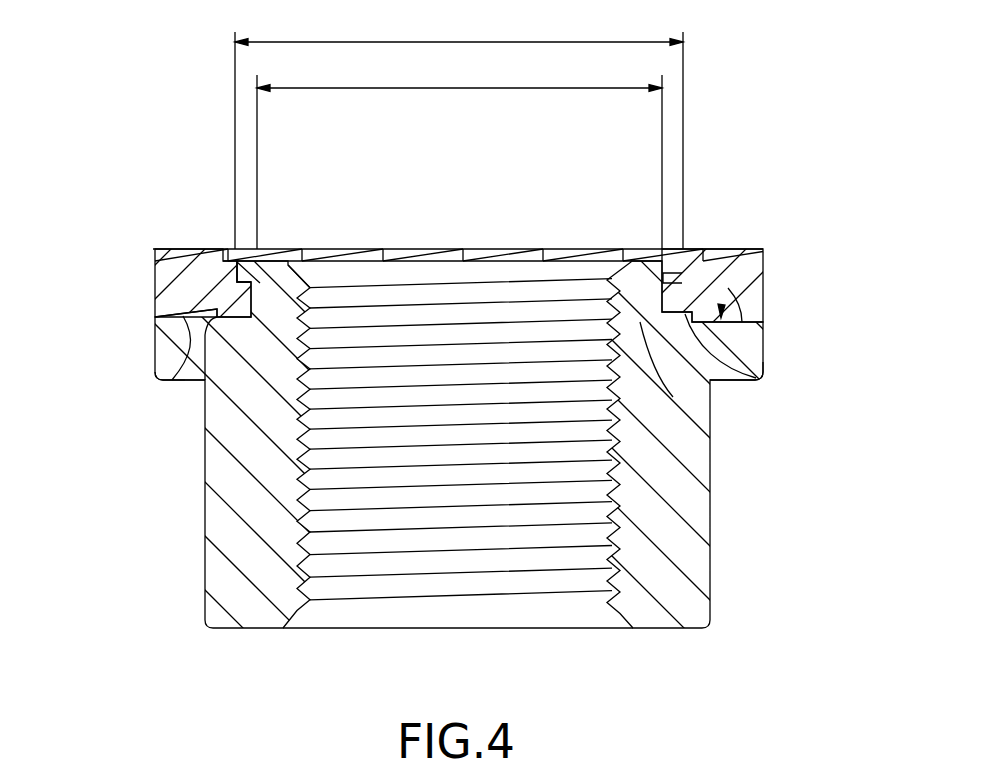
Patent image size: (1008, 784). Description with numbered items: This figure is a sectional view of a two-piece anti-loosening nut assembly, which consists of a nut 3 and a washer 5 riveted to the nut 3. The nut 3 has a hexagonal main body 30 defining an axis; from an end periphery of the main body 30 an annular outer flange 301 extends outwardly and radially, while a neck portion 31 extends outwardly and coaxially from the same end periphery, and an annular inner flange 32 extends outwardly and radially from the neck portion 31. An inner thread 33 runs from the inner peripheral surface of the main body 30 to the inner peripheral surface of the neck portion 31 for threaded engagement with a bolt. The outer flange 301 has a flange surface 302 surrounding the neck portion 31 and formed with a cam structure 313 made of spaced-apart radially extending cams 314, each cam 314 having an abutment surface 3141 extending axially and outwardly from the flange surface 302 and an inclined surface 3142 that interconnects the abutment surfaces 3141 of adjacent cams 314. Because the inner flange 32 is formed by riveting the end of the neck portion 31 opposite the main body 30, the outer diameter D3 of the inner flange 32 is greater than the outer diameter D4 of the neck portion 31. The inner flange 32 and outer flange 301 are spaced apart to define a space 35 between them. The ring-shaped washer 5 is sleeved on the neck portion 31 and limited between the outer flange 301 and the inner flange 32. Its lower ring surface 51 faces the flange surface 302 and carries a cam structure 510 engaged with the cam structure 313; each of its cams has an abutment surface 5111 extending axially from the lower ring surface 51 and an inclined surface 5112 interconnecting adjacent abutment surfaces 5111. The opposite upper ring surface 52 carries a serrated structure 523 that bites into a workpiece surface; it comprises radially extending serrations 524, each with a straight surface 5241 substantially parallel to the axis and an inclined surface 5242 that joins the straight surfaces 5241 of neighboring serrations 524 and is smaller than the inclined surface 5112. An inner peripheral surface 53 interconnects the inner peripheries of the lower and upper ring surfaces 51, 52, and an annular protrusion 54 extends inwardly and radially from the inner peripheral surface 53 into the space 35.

The nut 3 is at (722, 500).
The main body 30 is at (711, 545).
The neck portion 31 is at (281, 292).
The annular inner flange 32 is at (265, 268).
The inner thread 33 is at (330, 498).
The space 35 is at (713, 390).
The annular outer flange 301 is at (166, 330).
The flange surface 302 is at (117, 368).
The cam structure 313 is at (168, 358).
The cam 314 is at (107, 430).
The abutment surface 3141 is at (200, 383).
The inclined surface 3142 is at (165, 381).
The washer 5 is at (171, 238).
The lower ring surface 51 is at (589, 392).
The cam structure 510 is at (828, 180).
The abutment surface 5111 is at (712, 305).
The inclined surface 5112 is at (742, 318).
The upper ring surface 52 is at (450, 191).
The serrated structure 523 is at (203, 238).
The serration 524 is at (615, 178).
The straight surface 5241 is at (628, 252).
The inclined surface 5242 is at (588, 253).
The inner peripheral surface 53 is at (695, 258).
The annular protrusion 54 is at (757, 376).
The outer diameter of the annular inner flange D3 is at (459, 131).
The outer diameter of the neck portion D4 is at (459, 154).